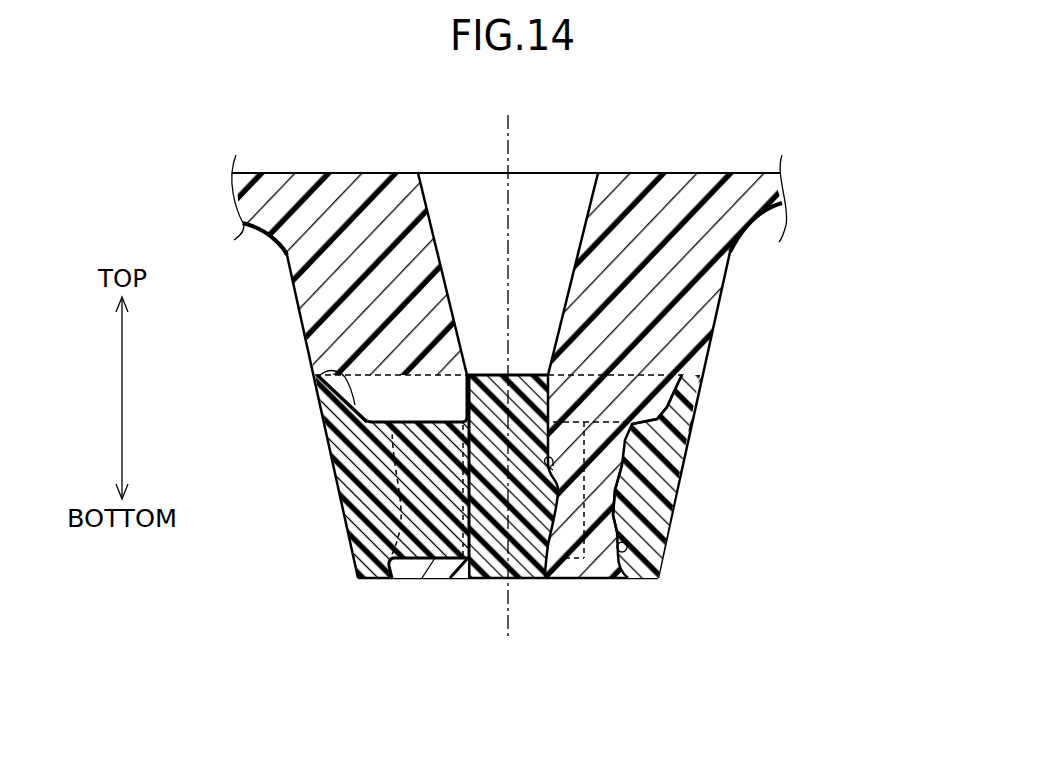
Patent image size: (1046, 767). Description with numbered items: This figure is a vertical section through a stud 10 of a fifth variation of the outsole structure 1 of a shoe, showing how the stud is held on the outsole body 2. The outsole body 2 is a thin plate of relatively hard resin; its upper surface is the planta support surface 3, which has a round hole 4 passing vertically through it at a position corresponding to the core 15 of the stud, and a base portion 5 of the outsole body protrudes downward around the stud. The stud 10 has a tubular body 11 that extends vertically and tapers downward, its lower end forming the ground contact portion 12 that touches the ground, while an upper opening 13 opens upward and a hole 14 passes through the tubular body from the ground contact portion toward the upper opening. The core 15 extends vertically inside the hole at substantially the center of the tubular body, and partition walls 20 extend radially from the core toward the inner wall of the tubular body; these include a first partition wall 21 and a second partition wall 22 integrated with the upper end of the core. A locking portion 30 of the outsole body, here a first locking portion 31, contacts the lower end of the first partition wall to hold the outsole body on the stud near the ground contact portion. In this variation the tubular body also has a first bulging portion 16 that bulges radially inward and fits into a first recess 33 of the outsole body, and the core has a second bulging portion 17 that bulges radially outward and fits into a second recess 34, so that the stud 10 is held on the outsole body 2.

The outsole structure 1 is at (577, 145).
The outsole body 2 is at (650, 175).
The planta support surface 3 is at (720, 173).
The round hole 4 is at (436, 206).
The base portion 5 is at (293, 290).
The stud 10 is at (717, 394).
The tubular body 11 is at (689, 443).
The ground contact portion 12 is at (648, 580).
The upper opening 13 is at (348, 388).
The hole 14 is at (627, 543).
The core 15 is at (493, 582).
The first bulging portion 16 is at (622, 510).
The second bulging portion 17 is at (551, 503).
The partition wall 20 is at (400, 528).
The first partition wall 21 is at (440, 570).
The second partition wall 22 is at (400, 392).
The locking portion 30 is at (340, 589).
The first locking portion 31 is at (400, 580).
The first recess 33 is at (675, 493).
The second recess 34 is at (553, 470).